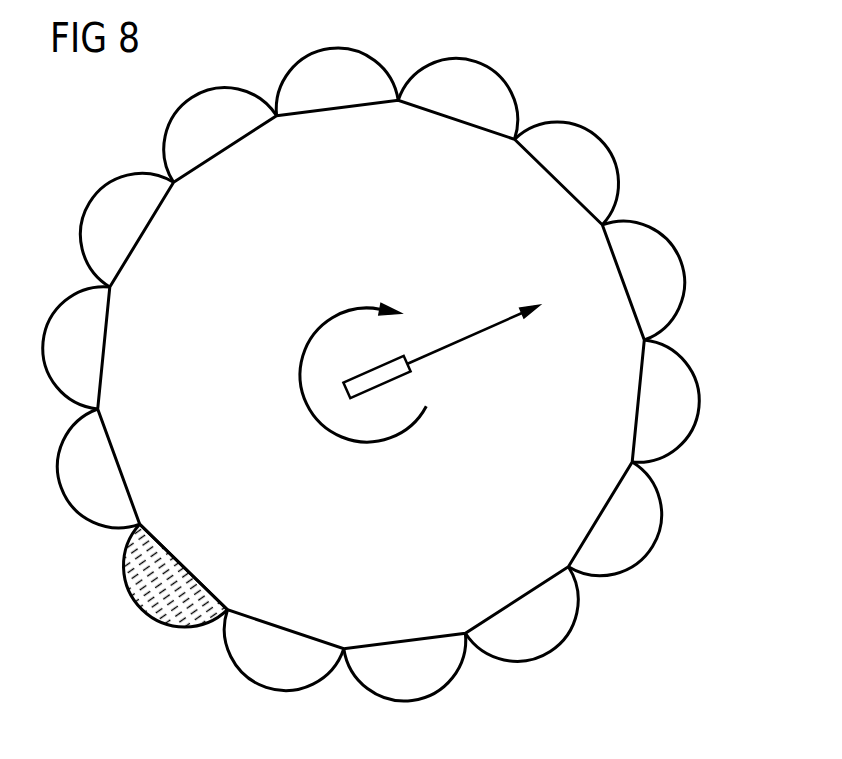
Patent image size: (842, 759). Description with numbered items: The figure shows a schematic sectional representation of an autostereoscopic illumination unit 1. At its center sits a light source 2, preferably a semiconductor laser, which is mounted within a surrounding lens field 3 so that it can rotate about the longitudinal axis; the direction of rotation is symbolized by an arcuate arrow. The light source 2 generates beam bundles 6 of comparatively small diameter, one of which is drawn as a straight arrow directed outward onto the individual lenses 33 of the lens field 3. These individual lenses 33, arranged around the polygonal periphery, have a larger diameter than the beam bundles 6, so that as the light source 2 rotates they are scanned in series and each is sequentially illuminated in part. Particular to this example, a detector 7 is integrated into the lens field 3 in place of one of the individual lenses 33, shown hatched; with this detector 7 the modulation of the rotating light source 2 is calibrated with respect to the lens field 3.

The illumination unit 1 is at (657, 77).
The light source 2 is at (372, 390).
The lens field 3 is at (682, 270).
The individual lenses 33 is at (680, 410).
The beam bundles 6 is at (472, 340).
The detector 7 is at (112, 627).